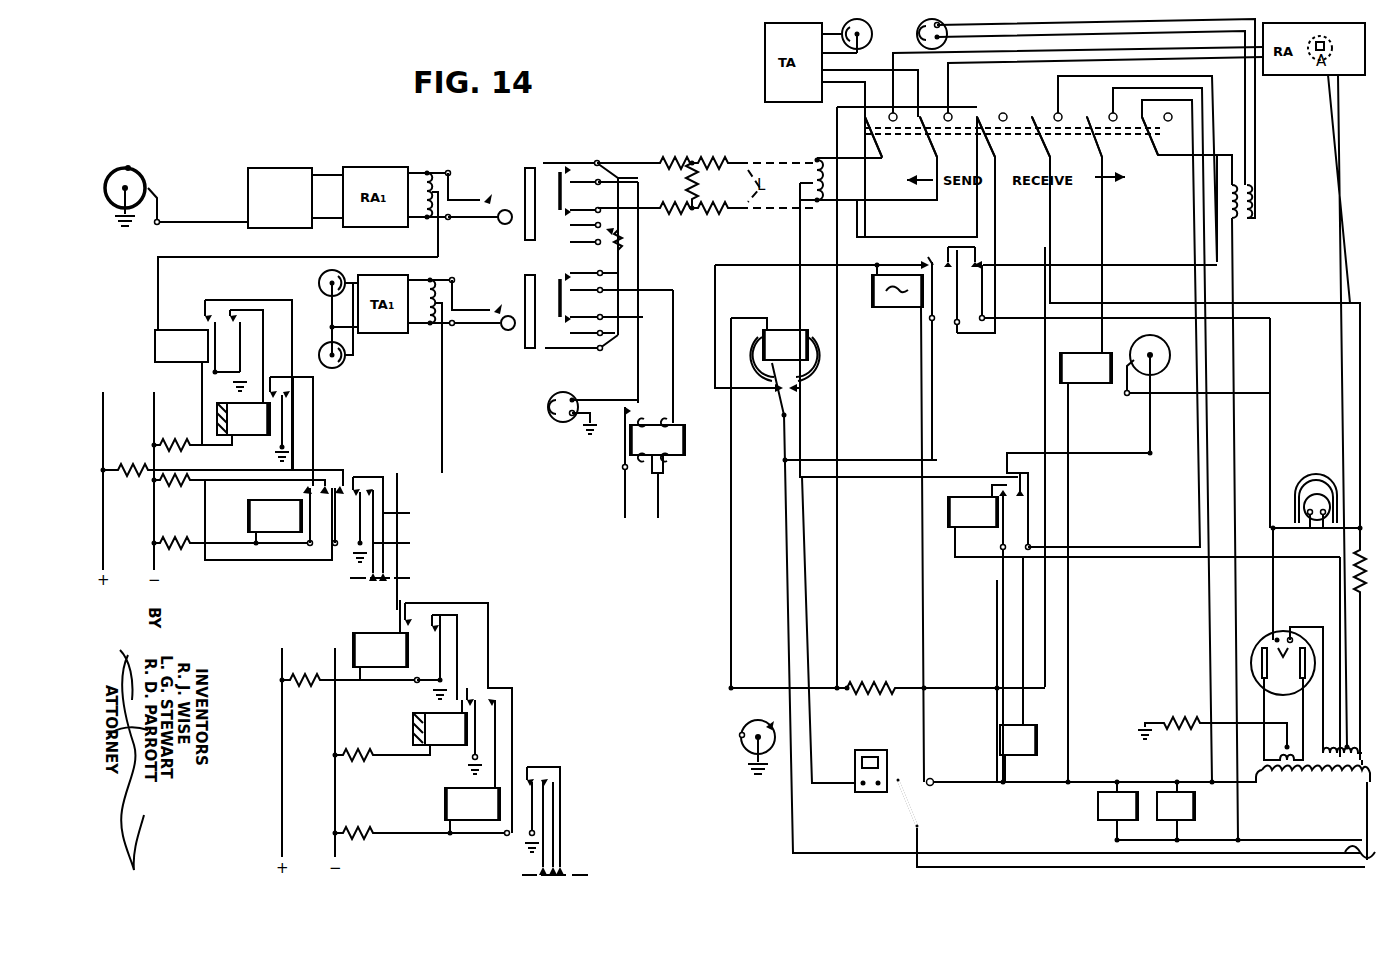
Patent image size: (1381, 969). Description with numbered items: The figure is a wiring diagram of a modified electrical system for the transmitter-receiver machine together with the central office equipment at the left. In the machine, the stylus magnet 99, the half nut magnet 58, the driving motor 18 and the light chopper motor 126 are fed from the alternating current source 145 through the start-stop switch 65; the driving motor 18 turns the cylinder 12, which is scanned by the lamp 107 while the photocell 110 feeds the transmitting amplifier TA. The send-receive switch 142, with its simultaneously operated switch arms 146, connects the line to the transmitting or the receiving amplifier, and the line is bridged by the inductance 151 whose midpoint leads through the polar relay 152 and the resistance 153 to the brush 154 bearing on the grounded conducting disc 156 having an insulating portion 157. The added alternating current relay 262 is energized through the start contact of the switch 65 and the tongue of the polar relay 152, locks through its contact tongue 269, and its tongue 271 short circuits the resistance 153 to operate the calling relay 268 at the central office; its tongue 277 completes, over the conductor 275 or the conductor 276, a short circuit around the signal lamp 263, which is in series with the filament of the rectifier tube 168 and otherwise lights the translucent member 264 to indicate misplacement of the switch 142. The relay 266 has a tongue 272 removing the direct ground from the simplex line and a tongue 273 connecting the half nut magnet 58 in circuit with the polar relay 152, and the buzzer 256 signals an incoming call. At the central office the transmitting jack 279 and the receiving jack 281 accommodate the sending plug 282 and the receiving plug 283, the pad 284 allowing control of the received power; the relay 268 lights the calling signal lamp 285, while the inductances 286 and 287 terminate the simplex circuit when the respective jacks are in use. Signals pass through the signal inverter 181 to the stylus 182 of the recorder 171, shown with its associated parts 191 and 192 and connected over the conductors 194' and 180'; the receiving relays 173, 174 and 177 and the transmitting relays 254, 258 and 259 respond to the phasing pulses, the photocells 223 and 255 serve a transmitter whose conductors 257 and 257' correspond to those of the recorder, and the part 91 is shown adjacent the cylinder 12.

The recorder 171 is at (109, 164).
The lamp contact 191 is at (141, 155).
The ground connection 192 is at (120, 202).
The stylus 182 is at (157, 206).
The signal inverter 181 is at (266, 170).
The inductance 287 is at (440, 166).
The receiving plug 283 is at (475, 188).
The relay 173 is at (155, 346).
The photocell 223 is at (319, 283).
The additional photocell 255 is at (338, 365).
The inductance 286 is at (434, 320).
The sending plug 282 is at (478, 296).
The slow-to-release relay 174 is at (262, 432).
The relay 177 is at (248, 516).
The conductor 194' is at (414, 513).
The contact 180' is at (409, 543).
The relay 254 is at (382, 638).
The slow-to-release relay 258 is at (413, 730).
The relay 259 is at (445, 806).
The conductor 257 is at (541, 821).
The conductor 257' is at (583, 827).
The receiving jack 281 is at (551, 168).
The pad 284 is at (614, 250).
The transmitting jack 279 is at (576, 355).
The calling signal lamp 285 is at (558, 420).
The high current relay 268 is at (680, 440).
The photocell 110 is at (870, 27).
The lamp 107 is at (920, 42).
The send-receive switch 142 is at (1045, 104).
The switch arms 146 is at (960, 160).
The inductance 151 is at (824, 159).
The polar relay 152 is at (783, 319).
The contact tongue 269 is at (927, 258).
The alternating current relay 262 is at (906, 305).
The contact tongue 277 is at (985, 300).
The relay contact tongue 271 is at (950, 325).
The conductor 276 is at (1280, 312).
The conductor 275 is at (1276, 335).
The stylus magnet 99 is at (1088, 352).
The cylinder 12 is at (1154, 342).
The contact 91 is at (1125, 390).
The relay 266 is at (978, 506).
The tongue 272 is at (997, 550).
The tongue 273 is at (1028, 522).
The transparent or translucent member 264 is at (1296, 480).
The signal lamp 263 is at (1316, 496).
The rectifier tube 168 is at (1264, 646).
The resistance 153 is at (870, 690).
The insulating portion 157 is at (778, 726).
The brush 154 is at (740, 734).
The conducting disc 156 is at (746, 754).
The buzzer 256 is at (862, 748).
The start-stop switch 65 is at (910, 818).
The half nut magnet 58 is at (1000, 745).
The driving motor 18 is at (1098, 808).
The light chopper motor 126 is at (1231, 803).
The alternating current source 145 is at (1370, 842).